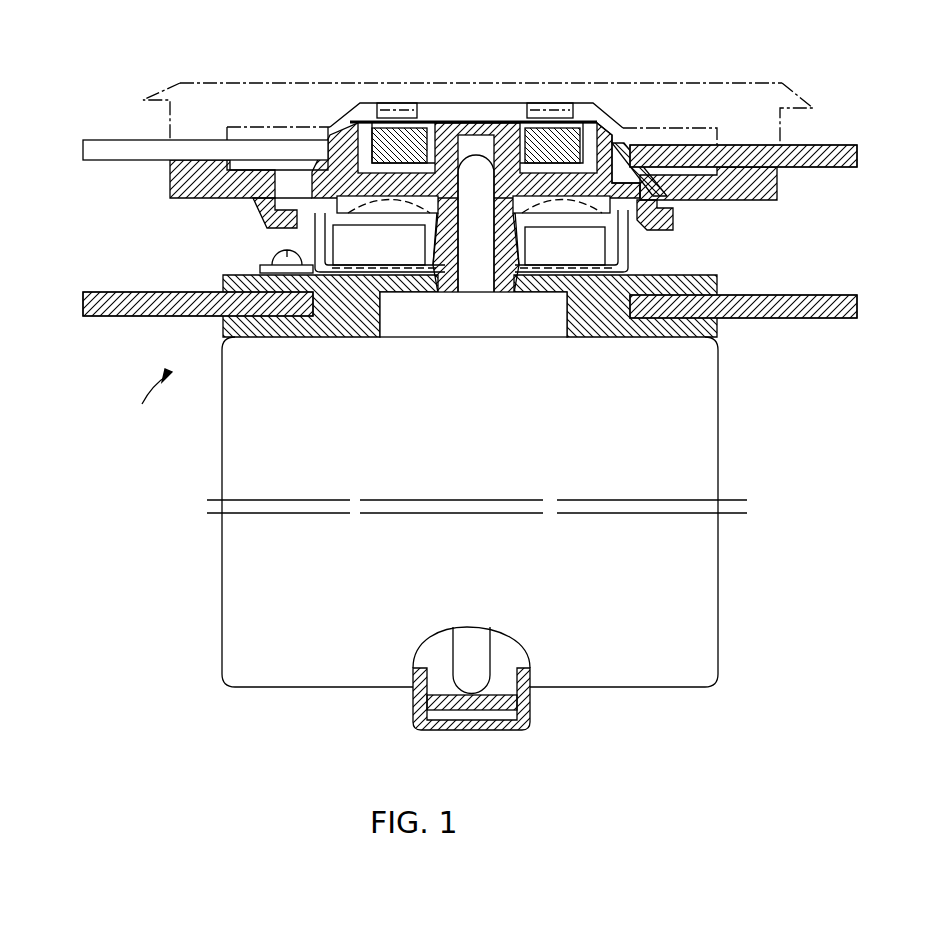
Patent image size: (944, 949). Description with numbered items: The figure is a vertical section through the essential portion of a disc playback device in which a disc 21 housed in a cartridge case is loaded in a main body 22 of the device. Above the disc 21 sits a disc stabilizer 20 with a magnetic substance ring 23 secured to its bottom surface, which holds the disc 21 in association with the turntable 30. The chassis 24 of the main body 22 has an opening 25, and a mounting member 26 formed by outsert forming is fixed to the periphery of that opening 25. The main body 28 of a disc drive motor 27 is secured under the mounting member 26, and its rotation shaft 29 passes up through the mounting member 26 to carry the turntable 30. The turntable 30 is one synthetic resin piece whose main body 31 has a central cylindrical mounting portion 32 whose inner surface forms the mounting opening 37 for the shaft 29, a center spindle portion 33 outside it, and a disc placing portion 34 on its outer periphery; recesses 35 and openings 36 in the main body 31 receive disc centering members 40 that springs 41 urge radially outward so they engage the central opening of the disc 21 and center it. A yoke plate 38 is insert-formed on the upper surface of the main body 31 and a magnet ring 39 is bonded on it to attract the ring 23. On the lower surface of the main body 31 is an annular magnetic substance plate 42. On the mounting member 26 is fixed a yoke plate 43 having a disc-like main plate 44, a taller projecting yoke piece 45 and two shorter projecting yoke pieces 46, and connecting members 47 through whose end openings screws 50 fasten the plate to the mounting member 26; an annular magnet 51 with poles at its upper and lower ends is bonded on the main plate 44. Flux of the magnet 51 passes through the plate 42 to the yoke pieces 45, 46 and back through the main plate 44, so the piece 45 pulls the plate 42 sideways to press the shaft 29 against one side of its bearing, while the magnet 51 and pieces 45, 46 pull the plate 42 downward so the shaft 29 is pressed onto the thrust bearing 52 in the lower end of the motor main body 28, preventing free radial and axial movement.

The disc stabilizer 20 is at (692, 86).
The disc 21 is at (832, 146).
The main body 22 is at (108, 431).
The magnetic substance ring 23 is at (575, 103).
The chassis 24 is at (128, 318).
The opening 25 is at (316, 318).
The mounting member 26 is at (362, 318).
The disc drive motor 27 is at (722, 384).
The main body of the disc drive motor 28 is at (722, 419).
The rotation shaft 29 is at (478, 152).
The turntable 30 is at (215, 160).
The main body of the turntable 31 is at (266, 150).
The mounting portion 32 is at (442, 137).
The center spindle portion 33 is at (336, 138).
The disc placing portion 34 is at (222, 167).
The recess 35 is at (726, 186).
The opening 36 is at (662, 198).
The mounting opening 37 is at (494, 137).
The yoke plate 38 is at (370, 122).
The magnet ring 39 is at (408, 140).
The disc centering member 40 is at (648, 168).
The spring 41 is at (655, 224).
The magnetic substance plate 42 is at (622, 216).
The yoke plate 43 is at (592, 280).
The main plate 44 is at (417, 273).
The projecting yoke piece 45 is at (638, 276).
The projecting yoke piece 46 is at (312, 238).
The connecting member 47 is at (262, 268).
The screw 50 is at (288, 256).
The annular magnet 51 is at (537, 255).
The thrust bearing 52 is at (508, 690).